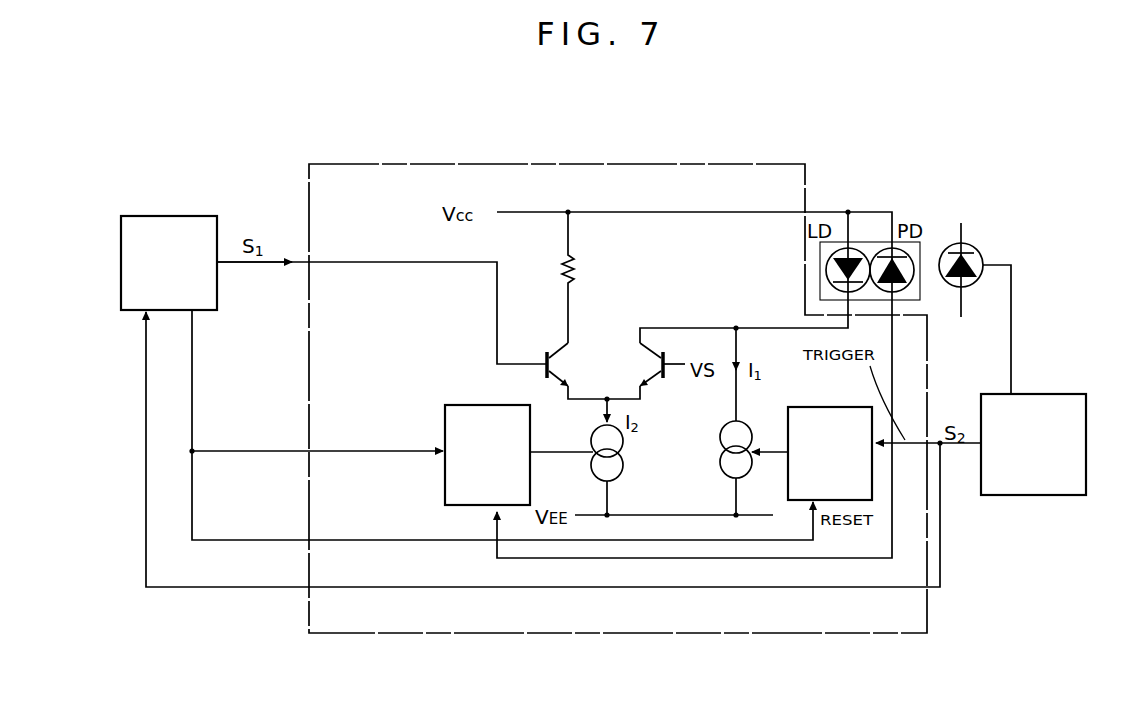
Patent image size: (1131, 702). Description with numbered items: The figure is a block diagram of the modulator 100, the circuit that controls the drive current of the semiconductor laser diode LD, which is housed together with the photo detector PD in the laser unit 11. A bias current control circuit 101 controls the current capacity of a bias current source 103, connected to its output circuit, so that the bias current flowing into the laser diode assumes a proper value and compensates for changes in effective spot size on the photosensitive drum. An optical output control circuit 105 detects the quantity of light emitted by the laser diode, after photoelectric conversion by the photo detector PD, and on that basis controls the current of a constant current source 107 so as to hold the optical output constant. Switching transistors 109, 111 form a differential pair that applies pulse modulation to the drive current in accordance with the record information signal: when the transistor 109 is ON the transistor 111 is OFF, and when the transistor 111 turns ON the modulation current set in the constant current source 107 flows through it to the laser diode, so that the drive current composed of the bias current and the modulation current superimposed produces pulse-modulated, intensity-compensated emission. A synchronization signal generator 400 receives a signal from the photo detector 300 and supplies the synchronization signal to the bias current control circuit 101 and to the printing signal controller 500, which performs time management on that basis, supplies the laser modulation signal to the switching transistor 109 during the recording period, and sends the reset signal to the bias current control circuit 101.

The modulator 100 is at (328, 626).
The printing signal controller 500 is at (183, 216).
The synchronization signal generator 400 is at (1018, 495).
The photo detector 300 is at (968, 243).
The optical output control circuit 105 is at (478, 405).
The bias current control circuit 101 is at (815, 407).
The bias current source 103 is at (740, 426).
The constant current source 107 is at (616, 449).
The switching transistor 109 is at (560, 350).
The switching transistor 111 is at (648, 382).
The laser diode / photodiode unit 11 is at (876, 242).